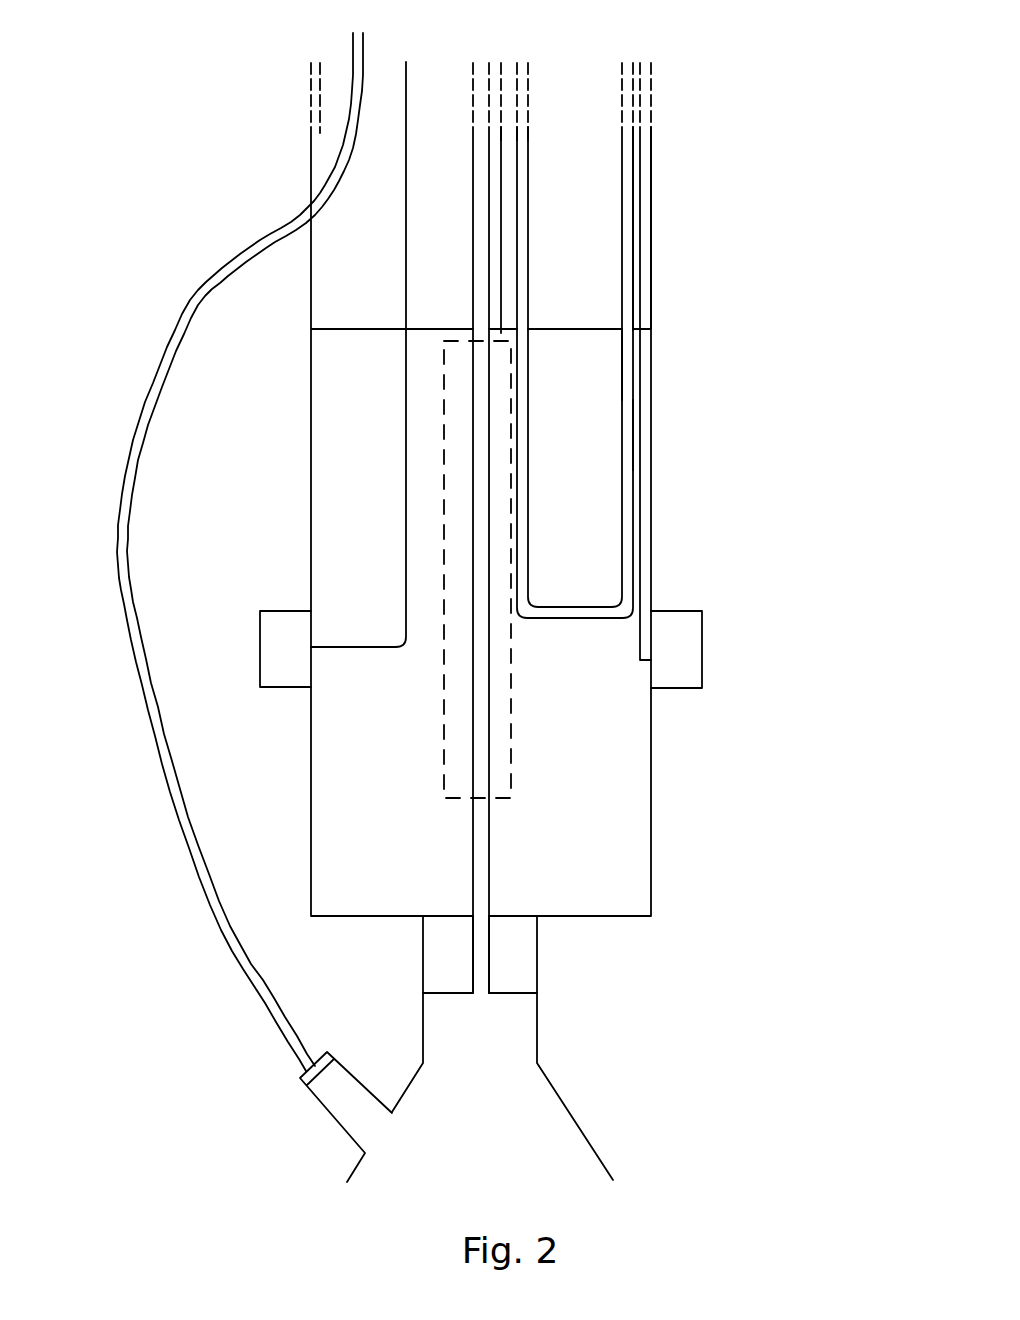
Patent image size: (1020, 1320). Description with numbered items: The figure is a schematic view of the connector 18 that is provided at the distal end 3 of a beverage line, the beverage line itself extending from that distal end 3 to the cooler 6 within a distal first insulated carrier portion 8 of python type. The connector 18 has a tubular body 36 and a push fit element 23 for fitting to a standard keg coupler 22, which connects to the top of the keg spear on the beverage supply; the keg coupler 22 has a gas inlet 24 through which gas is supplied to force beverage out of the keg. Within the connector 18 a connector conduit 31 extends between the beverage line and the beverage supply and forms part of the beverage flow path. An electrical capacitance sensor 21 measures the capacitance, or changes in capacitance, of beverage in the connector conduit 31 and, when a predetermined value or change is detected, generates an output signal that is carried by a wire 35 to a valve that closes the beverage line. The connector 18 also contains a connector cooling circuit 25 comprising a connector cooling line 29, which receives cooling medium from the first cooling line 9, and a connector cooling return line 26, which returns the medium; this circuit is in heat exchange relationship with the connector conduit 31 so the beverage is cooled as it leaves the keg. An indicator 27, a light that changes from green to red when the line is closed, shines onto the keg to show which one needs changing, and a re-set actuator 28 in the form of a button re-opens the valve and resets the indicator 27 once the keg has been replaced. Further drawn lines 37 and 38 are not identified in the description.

The distal end 3 is at (480, 992).
The cooler 6 is at (524, 212).
The distal first insulated carrier portion 8 is at (652, 172).
The first cooling line 9 is at (628, 233).
The connector 18 is at (687, 840).
The electrical capacitance sensor 21 is at (523, 729).
The standard keg coupler 22 is at (573, 1115).
The push fit element 23 is at (445, 950).
The gas inlet 24 is at (348, 1115).
The connector cooling circuit 25 is at (625, 435).
The connector cooling return line 26 is at (520, 505).
The indicator 27 is at (280, 671).
The re-set actuator 28 is at (685, 652).
The connector cooling line 29 is at (625, 367).
The connector conduit 31 is at (473, 540).
The wire 35 is at (508, 152).
The tubular body 36 is at (404, 412).
The tube 37 is at (643, 573).
The flexible tube 38 is at (200, 287).